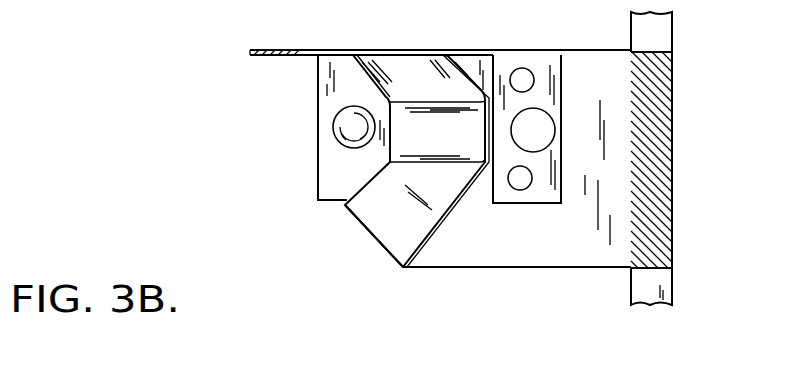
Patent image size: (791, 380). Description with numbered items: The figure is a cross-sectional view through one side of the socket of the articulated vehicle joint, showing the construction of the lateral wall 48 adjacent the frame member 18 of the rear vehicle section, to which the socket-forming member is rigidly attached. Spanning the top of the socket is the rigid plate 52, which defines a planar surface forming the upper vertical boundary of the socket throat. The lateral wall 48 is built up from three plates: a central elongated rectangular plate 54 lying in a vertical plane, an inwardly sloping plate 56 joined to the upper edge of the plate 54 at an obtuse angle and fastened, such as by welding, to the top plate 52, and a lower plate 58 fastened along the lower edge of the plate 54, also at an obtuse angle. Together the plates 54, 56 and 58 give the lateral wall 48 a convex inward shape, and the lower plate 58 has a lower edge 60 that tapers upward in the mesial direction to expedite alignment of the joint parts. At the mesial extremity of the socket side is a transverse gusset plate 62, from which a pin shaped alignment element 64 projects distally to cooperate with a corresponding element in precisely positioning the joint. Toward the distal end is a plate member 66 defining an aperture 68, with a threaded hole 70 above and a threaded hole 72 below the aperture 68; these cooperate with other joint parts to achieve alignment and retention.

The frame member 18 is at (650, 108).
The lateral wall 48 is at (433, 225).
The rigid plate 52 is at (335, 50).
The central elongated rectangular plate 54 is at (437, 135).
The inwardly sloping plate 56 is at (423, 81).
The lower plate 58 is at (406, 202).
The lower edge 60 is at (385, 254).
The transverse gusset plate 62 is at (318, 132).
The pin shaped alignment element 64 is at (347, 149).
The plate member 66 is at (503, 63).
The aperture 68 is at (542, 120).
The threaded hole 70 is at (523, 70).
The threaded hole 72 is at (530, 186).